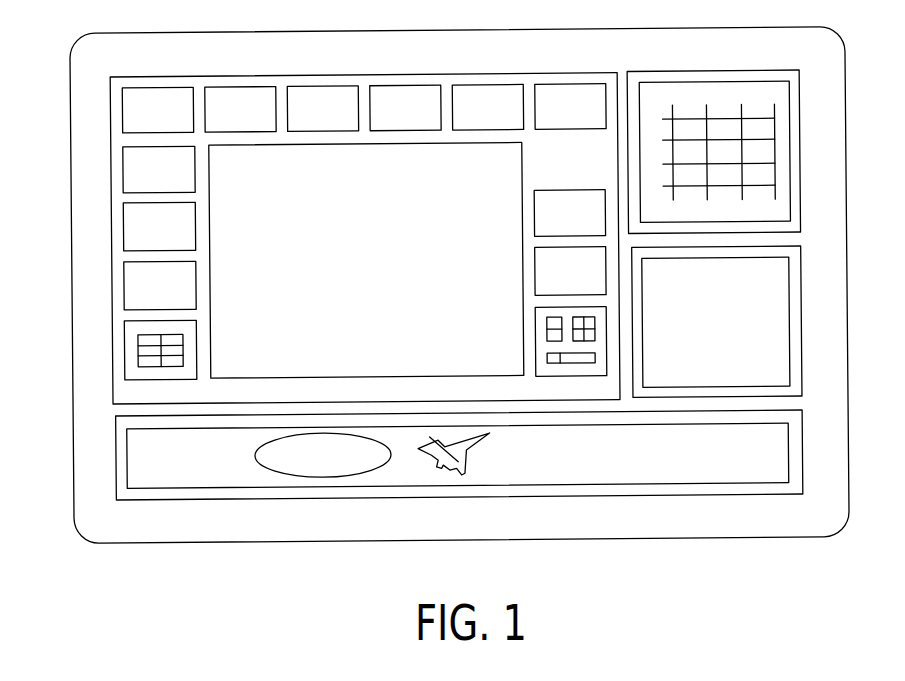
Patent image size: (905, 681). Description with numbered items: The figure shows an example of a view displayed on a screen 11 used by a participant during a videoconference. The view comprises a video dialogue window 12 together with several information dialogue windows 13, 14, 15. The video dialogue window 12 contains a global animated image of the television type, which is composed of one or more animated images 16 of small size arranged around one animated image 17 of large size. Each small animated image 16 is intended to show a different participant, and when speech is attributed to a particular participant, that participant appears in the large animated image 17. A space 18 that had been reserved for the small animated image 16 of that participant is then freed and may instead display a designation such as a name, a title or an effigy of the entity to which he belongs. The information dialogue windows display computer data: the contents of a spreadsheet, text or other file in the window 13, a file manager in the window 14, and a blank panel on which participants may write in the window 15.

The screen 11 is at (72, 117).
The video dialogue window 12 is at (100, 293).
The information dialogue window 13 is at (801, 168).
The information dialogue window 14 is at (802, 340).
The information dialogue window 15 is at (802, 461).
The animated image of small size 16 is at (573, 95).
The animated image of large size 17 is at (225, 382).
The space 18 is at (598, 153).